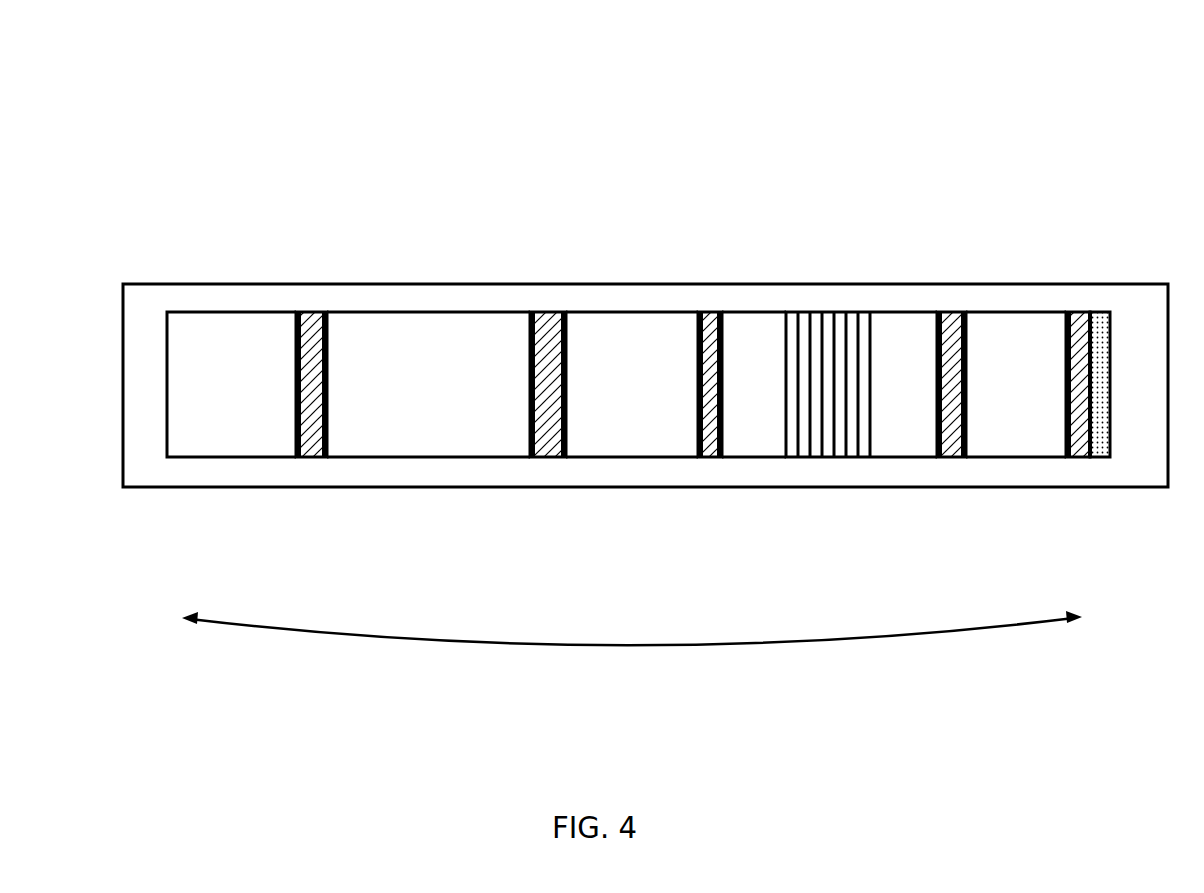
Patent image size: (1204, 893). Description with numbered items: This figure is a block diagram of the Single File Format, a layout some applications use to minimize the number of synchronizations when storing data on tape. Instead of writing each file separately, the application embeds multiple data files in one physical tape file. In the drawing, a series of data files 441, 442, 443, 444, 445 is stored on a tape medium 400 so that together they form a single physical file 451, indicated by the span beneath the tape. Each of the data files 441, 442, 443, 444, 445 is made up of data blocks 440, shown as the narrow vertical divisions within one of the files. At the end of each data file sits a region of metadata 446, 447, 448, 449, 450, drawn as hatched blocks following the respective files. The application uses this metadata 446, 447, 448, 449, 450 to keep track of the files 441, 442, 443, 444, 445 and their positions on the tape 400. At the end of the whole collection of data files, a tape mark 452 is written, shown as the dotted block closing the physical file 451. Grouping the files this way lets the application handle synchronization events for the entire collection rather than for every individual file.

The tape medium 400 is at (497, 120).
The data blocks 440 is at (850, 318).
The data file 441 is at (254, 327).
The data file 442 is at (433, 327).
The data file 443 is at (594, 327).
The data file 444 is at (748, 327).
The data file 445 is at (1025, 327).
The metadata 446 is at (317, 458).
The metadata 447 is at (557, 458).
The metadata 448 is at (712, 458).
The metadata 449 is at (945, 458).
The metadata 450 is at (1074, 458).
The single physical file 451 is at (632, 666).
The tape mark 452 is at (1106, 318).